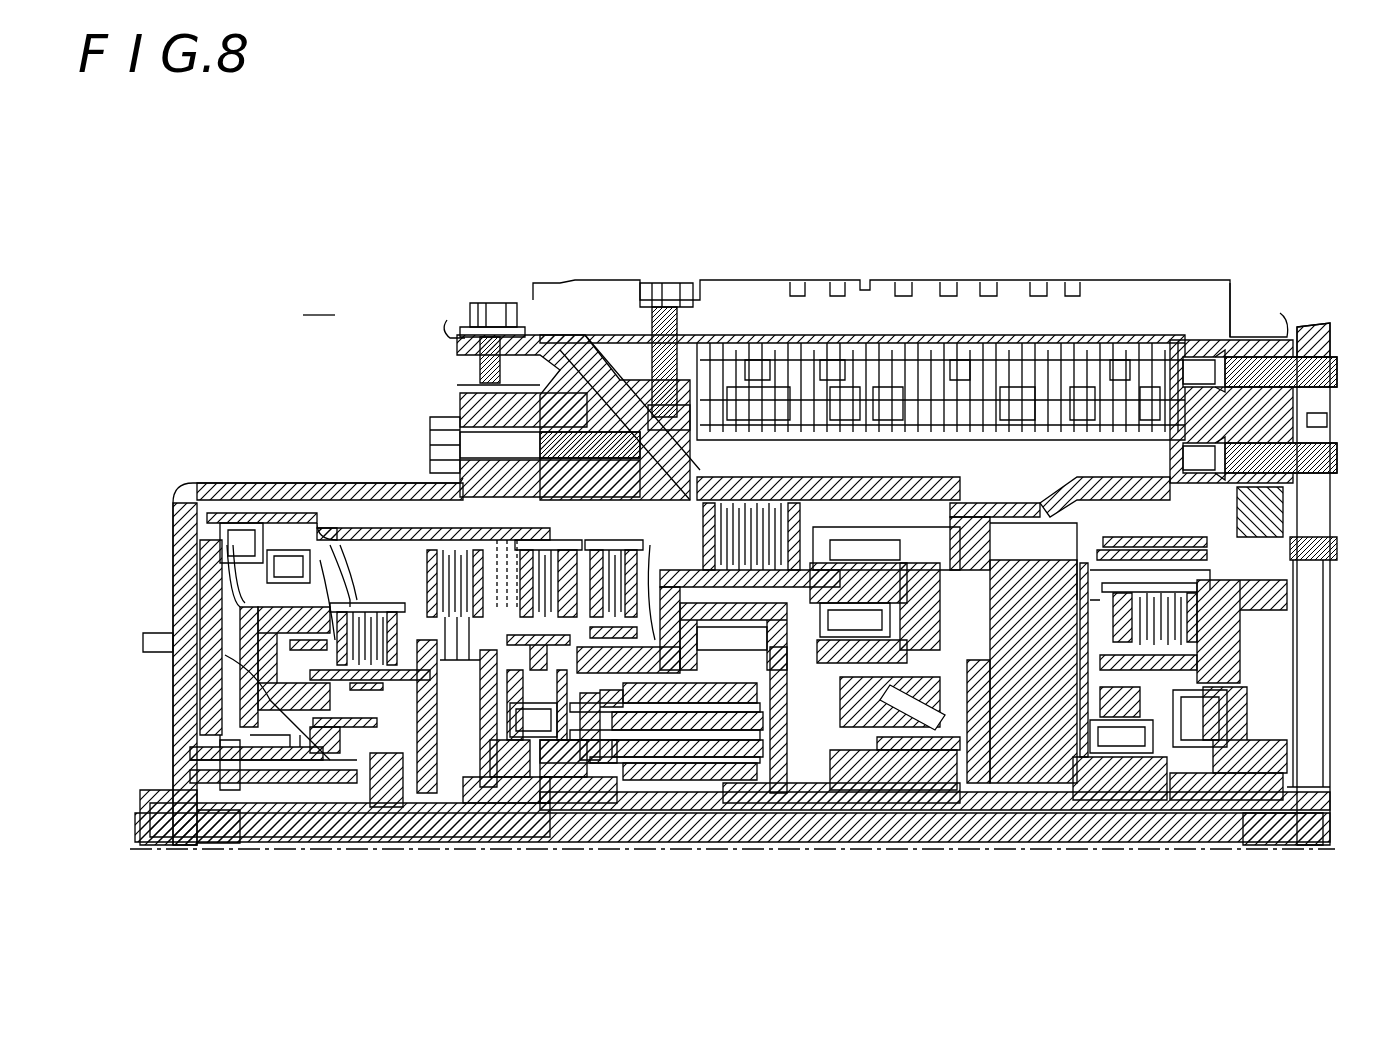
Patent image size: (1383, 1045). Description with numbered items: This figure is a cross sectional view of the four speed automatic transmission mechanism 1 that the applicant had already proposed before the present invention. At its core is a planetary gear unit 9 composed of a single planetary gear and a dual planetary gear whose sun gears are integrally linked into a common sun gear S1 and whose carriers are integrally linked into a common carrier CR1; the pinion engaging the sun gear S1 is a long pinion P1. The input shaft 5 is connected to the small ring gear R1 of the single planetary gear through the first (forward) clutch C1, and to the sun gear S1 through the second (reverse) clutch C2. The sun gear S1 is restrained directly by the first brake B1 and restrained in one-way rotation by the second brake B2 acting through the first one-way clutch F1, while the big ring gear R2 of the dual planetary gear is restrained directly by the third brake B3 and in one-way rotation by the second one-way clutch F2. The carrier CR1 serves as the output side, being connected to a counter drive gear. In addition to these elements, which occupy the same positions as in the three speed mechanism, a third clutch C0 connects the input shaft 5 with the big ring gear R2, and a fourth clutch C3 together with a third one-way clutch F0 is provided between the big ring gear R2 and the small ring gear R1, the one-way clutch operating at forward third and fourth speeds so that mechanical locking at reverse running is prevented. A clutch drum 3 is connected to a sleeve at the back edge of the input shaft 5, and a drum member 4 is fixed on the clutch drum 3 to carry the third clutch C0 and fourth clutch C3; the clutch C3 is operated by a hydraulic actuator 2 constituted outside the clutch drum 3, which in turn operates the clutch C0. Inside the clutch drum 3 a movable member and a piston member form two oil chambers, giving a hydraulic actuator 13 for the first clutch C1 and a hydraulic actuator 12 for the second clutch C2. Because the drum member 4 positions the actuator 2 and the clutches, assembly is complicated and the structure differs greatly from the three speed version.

The four speed automatic transmission mechanism 1 is at (348, 375).
The hydraulic actuator 2 is at (240, 510).
The clutch drum 3 is at (357, 550).
The drum member 4 is at (335, 540).
The input shaft 5 is at (810, 830).
The planetary gear unit 9 is at (705, 797).
The hydraulic actuator 12 is at (227, 737).
The hydraulic actuator 13 is at (237, 680).
The third clutch C0 is at (617, 540).
The first (forward) clutch C1 is at (468, 550).
The second (reverse) clutch C2 is at (397, 590).
The fourth clutch C3 is at (555, 547).
The first brake B1 is at (1167, 537).
The second brake B2 is at (1213, 563).
The third brake B3 is at (758, 503).
The third one-way clutch F0 is at (548, 699).
The first one-way clutch F1 is at (1180, 690).
The second one-way clutch F2 is at (875, 613).
The ring gear (small ring gear) R1 is at (653, 563).
The ring gear (big ring gear) R2 is at (687, 537).
The common sun gear S1 is at (667, 788).
The long pinion P1 is at (640, 775).
The common carrier CR1 is at (843, 795).